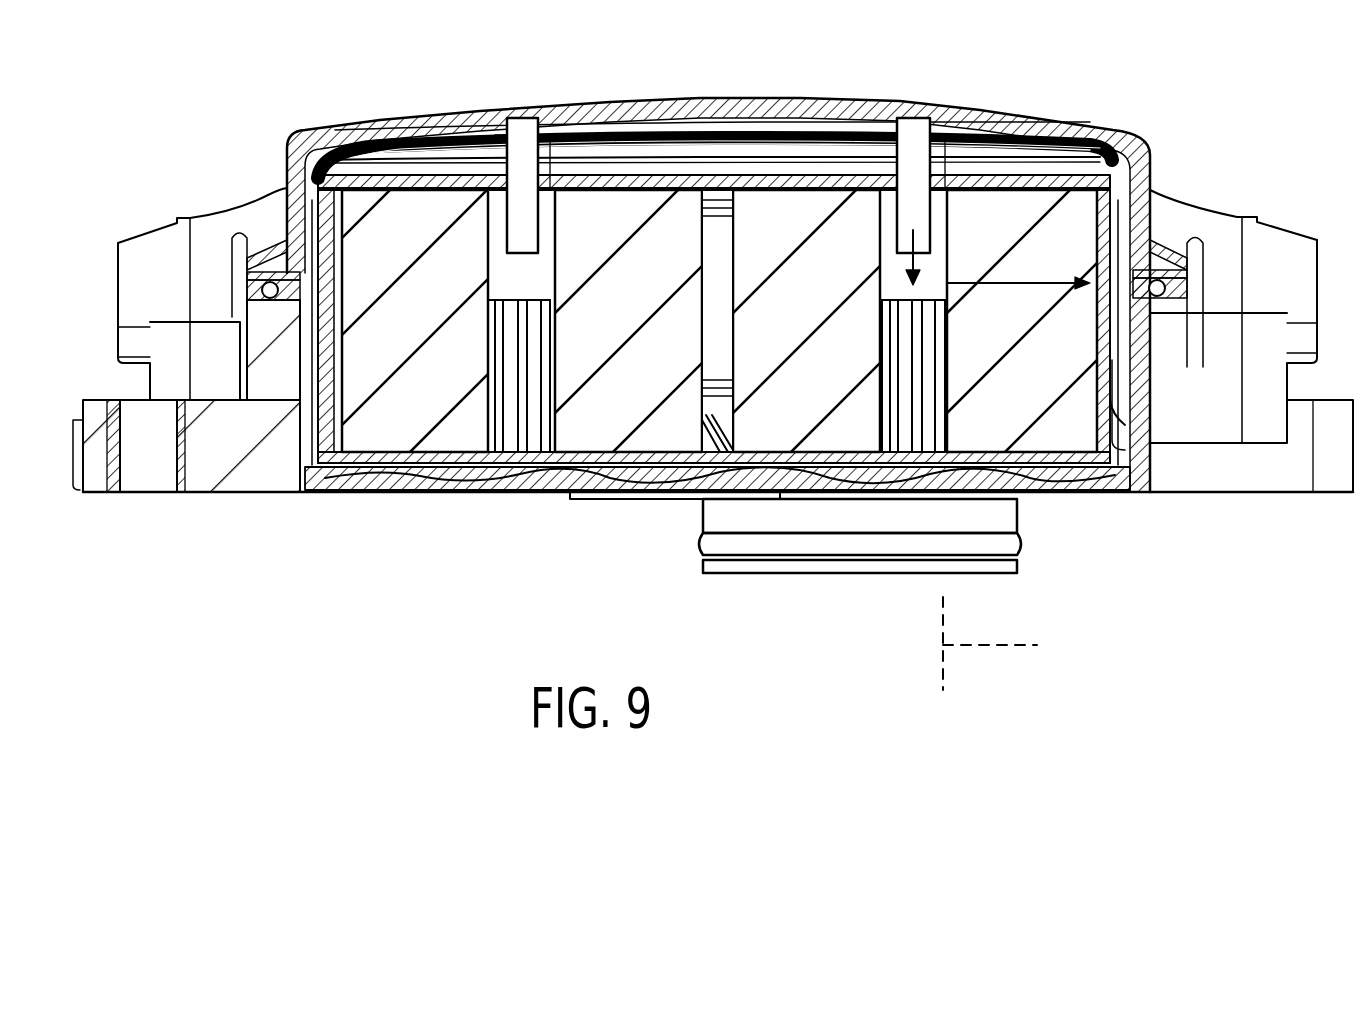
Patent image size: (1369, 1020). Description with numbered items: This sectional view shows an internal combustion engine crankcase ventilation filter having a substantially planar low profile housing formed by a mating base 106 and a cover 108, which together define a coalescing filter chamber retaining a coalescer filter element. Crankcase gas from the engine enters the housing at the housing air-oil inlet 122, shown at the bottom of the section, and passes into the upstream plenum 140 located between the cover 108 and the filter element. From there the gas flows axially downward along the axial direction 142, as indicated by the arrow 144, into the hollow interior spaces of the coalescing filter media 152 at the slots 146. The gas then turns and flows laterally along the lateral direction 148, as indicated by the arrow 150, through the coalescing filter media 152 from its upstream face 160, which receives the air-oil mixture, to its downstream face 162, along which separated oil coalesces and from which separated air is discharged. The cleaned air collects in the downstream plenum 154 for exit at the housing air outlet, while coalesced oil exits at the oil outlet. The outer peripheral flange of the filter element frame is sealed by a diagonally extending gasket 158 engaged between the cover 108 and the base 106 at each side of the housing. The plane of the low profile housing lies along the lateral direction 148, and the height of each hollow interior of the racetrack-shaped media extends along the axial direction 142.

The base 106 is at (1155, 490).
The cover 108 is at (1132, 132).
The housing air-oil inlet 122 is at (702, 508).
The upstream plenum 140 is at (765, 158).
The axial direction 142 is at (942, 645).
The arrow 144 is at (885, 244).
The slots 146 is at (890, 300).
The lateral direction 148 is at (998, 648).
The arrow 150 is at (1025, 282).
The coalescing filter media 152 is at (1080, 435).
The downstream plenum 154 is at (1130, 405).
The gasket 158 is at (255, 285).
The upstream face 160 is at (960, 255).
The downstream face 162 is at (1085, 313).